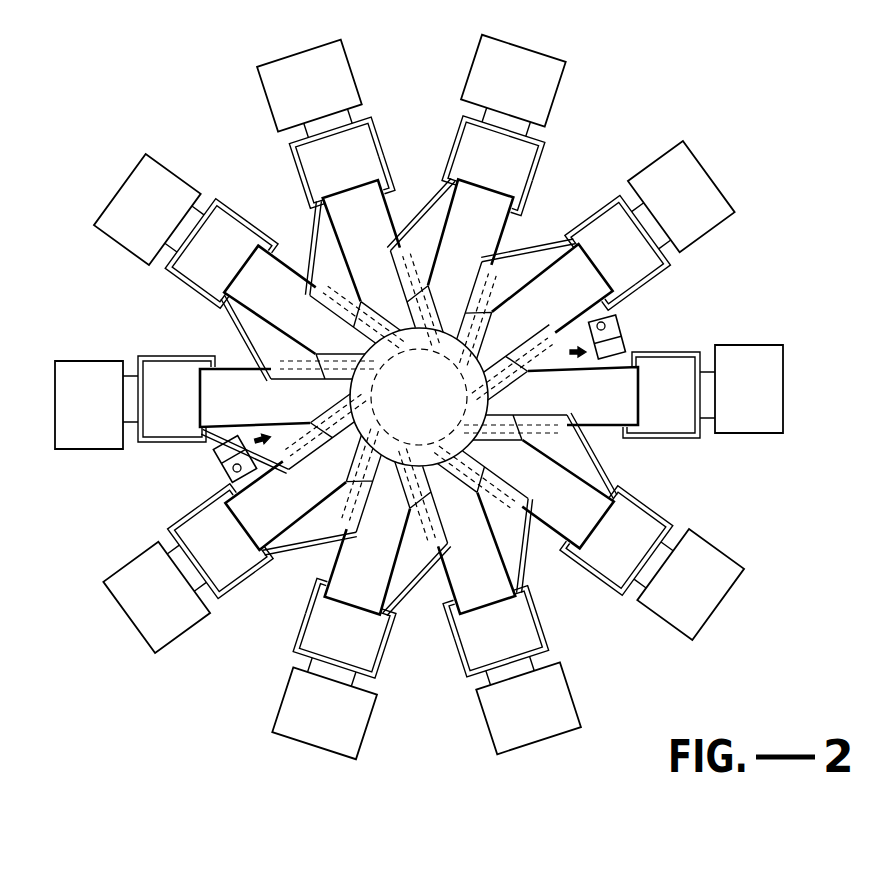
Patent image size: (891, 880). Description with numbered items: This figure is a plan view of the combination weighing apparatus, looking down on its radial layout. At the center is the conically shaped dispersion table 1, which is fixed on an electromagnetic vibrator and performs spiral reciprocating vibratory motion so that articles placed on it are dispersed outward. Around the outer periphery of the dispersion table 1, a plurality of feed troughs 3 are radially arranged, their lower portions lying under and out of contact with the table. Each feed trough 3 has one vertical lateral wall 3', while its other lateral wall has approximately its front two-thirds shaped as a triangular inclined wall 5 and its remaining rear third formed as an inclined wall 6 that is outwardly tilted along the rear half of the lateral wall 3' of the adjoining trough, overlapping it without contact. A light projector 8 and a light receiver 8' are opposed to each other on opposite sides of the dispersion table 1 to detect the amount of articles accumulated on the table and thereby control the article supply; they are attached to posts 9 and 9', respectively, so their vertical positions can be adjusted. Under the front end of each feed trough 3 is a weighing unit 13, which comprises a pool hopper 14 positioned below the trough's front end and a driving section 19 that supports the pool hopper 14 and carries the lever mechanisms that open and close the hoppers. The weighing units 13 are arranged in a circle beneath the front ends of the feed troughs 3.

The dispersion table 1 is at (419, 405).
The feed trough 3 is at (518, 233).
The lateral wall 3' is at (610, 243).
The triangular inclined wall 5 is at (436, 193).
The inclined wall 6 is at (407, 303).
The light projector 8 is at (220, 459).
The light receiver 8' is at (626, 337).
The post 9 is at (214, 480).
The post 9' is at (626, 314).
The weighing unit 13 is at (553, 117).
The pool hopper 14 is at (466, 172).
The driving section 19 is at (555, 58).